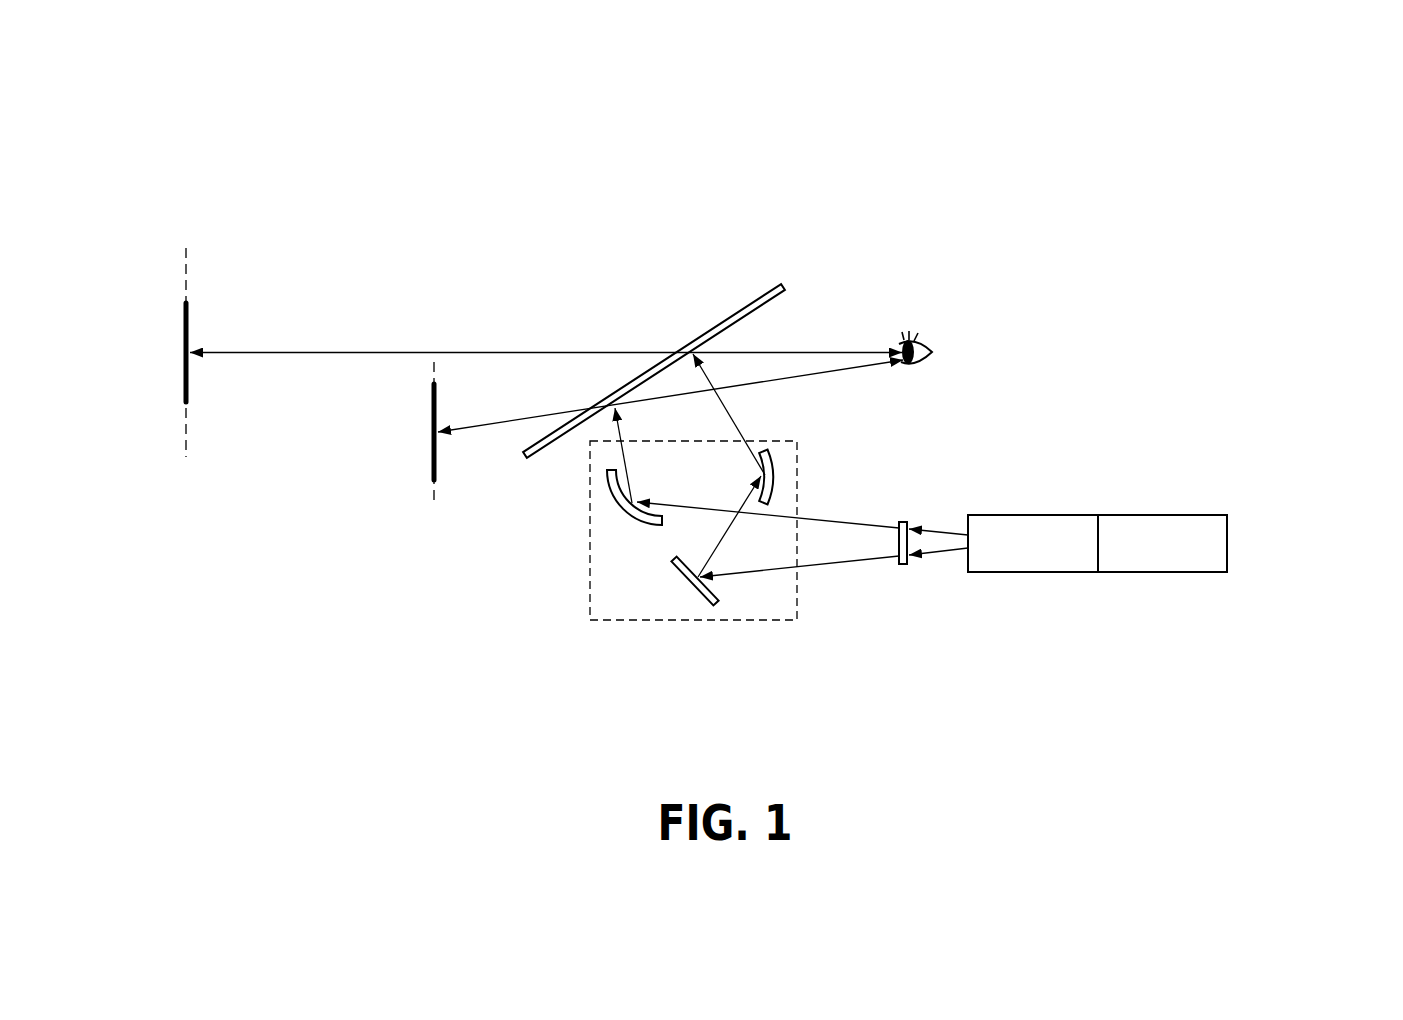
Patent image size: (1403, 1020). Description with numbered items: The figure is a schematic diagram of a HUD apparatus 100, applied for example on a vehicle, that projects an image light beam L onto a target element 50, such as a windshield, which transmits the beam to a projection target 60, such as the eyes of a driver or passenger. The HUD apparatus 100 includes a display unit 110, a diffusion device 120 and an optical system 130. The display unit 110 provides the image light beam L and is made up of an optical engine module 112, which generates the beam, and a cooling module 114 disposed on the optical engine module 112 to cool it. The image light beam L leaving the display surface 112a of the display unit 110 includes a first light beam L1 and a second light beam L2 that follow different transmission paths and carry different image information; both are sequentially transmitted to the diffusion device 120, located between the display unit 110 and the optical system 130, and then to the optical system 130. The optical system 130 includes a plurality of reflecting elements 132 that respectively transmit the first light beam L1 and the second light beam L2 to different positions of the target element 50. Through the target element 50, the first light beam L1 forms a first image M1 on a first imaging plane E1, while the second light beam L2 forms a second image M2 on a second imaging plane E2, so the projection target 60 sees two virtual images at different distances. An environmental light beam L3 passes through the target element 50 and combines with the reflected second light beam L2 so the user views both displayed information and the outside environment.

The HUD apparatus 100 is at (1062, 403).
The display unit 110 is at (1159, 375).
The optical engine module 112 is at (1062, 515).
The cooling module 114 is at (1190, 515).
The display surface 112a is at (967, 565).
The diffusion device 120 is at (900, 520).
The optical system 130 is at (657, 620).
The reflecting elements 132 is at (770, 480).
The target element 50 is at (763, 295).
The projection target 60 is at (917, 338).
The image light beam L is at (1005, 403).
The first light beam L1 is at (947, 528).
The second light beam L2 is at (932, 560).
The environmental light beam L3 is at (612, 328).
The first image M1 is at (434, 453).
The second image M2 is at (186, 323).
The first imaging plane E1 is at (434, 493).
The second imaging plane E2 is at (186, 258).